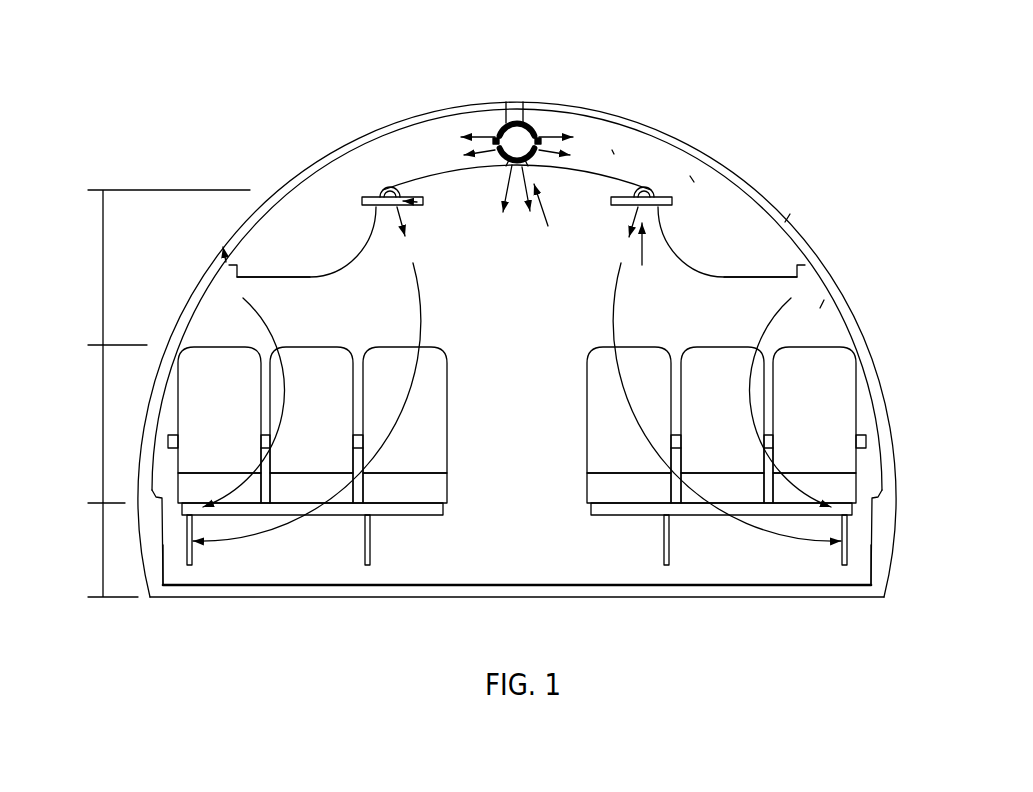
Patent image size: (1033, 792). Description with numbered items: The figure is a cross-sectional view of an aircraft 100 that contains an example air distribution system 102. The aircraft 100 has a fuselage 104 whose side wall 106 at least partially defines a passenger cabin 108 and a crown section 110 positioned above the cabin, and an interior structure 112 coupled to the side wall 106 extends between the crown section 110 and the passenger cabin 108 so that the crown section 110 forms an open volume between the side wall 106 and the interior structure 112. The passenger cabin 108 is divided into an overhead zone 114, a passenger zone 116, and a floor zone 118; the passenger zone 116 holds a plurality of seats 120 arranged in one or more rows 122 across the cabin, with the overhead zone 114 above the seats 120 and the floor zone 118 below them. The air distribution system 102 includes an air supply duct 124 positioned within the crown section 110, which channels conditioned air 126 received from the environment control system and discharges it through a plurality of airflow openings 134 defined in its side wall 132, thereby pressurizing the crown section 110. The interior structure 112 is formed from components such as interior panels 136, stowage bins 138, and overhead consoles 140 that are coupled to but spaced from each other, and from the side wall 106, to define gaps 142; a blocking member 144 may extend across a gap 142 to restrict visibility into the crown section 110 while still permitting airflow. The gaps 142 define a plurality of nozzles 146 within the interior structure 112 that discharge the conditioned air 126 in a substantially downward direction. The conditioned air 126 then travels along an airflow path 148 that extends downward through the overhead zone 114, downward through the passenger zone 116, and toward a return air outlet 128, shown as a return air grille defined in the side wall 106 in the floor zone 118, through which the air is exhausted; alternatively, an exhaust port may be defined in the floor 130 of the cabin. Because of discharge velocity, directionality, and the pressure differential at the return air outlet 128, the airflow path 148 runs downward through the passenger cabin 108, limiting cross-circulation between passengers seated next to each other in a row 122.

The aircraft 100 is at (757, 56).
The air distribution system 102 is at (614, 137).
The fuselage 104 is at (751, 167).
The side wall 106 is at (786, 222).
The passenger cabin 108 is at (832, 309).
The crown section 110 is at (691, 167).
The interior structure 112 is at (787, 241).
The overhead zone 114 is at (103, 282).
The passenger zone 116 is at (103, 437).
The floor zone 118 is at (103, 557).
The seats 120 is at (760, 362).
The rows 122 is at (871, 403).
The air supply duct 124 is at (523, 118).
The conditioned air 126 is at (477, 135).
The return air outlet 128 is at (167, 547).
The floor 130 is at (557, 560).
The side wall 132 is at (510, 120).
The airflow openings 134 is at (541, 123).
The interior panels 136 is at (428, 172).
The stowage bins 138 is at (340, 260).
The overhead consoles 140 is at (278, 279).
The gaps 142 is at (528, 257).
The blocking member 144 is at (383, 183).
The nozzles 146 is at (417, 202).
The airflow path 148 is at (283, 532).